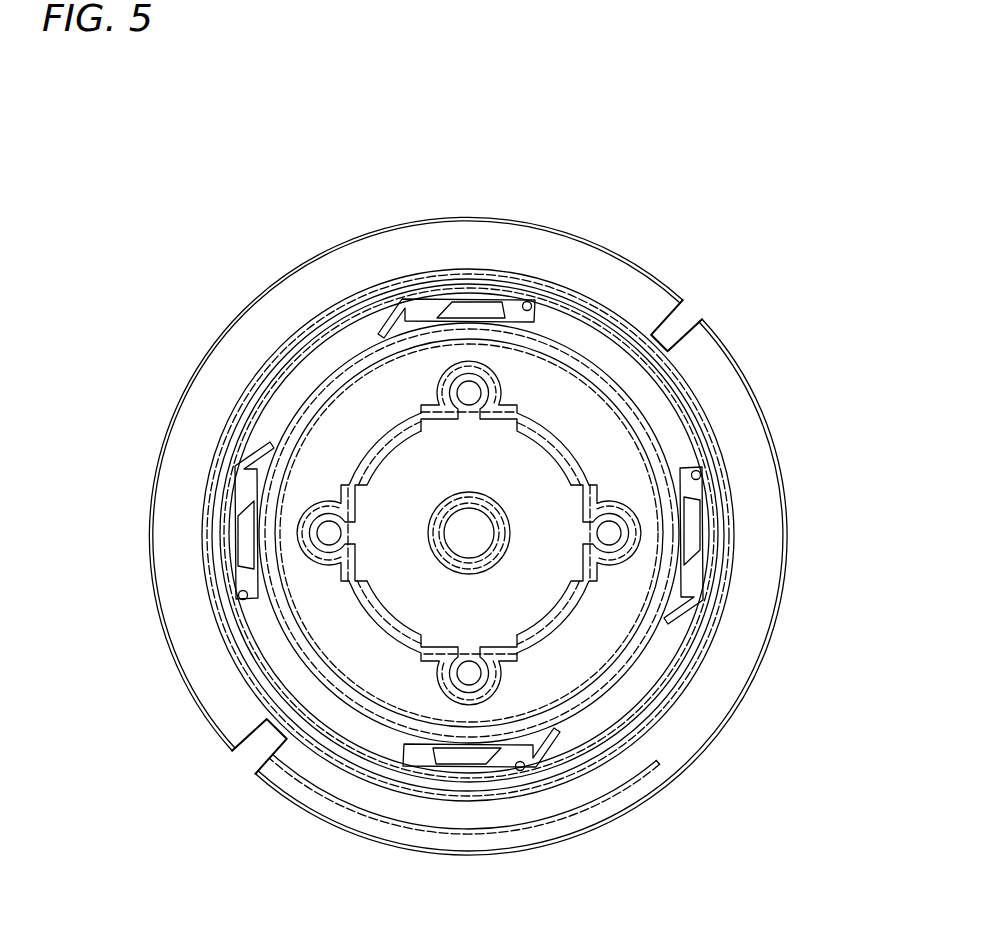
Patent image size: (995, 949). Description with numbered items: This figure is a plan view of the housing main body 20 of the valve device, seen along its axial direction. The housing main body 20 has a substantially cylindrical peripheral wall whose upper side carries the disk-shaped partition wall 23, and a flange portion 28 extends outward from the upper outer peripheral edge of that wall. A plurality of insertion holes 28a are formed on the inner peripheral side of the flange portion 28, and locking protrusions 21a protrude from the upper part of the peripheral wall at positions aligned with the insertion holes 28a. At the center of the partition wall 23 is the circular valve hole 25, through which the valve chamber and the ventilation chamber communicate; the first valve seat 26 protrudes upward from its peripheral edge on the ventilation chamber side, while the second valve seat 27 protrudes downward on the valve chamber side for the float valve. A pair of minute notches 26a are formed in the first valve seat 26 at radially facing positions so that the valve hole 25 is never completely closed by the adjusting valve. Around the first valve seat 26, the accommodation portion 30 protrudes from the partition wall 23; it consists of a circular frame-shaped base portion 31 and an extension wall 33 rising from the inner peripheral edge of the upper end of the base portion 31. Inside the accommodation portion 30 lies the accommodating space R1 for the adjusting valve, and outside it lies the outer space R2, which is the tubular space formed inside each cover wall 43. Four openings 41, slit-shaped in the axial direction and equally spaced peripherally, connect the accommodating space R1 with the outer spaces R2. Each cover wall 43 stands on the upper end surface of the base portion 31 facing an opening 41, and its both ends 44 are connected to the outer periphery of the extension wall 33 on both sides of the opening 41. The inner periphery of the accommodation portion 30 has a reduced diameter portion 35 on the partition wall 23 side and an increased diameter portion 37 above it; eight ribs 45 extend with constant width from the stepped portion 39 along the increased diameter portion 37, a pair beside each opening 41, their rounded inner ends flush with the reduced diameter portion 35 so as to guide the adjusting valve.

The housing main body 20 is at (415, 214).
The locking protrusion 21a is at (487, 302).
The partition wall 23 is at (320, 646).
The valve hole 25 is at (484, 531).
The first valve seat 26 is at (489, 534).
The minute notch 26a is at (450, 507).
The second valve seat 27 is at (660, 765).
The flange portion 28 is at (501, 536).
The insertion hole 28a is at (530, 303).
The accommodation portion 30 is at (660, 357).
The base portion 31 is at (608, 638).
The extension wall 33 is at (510, 685).
The reduced diameter portion 35 is at (262, 780).
The increased diameter portion 37 is at (433, 661).
The stepped portion 39 is at (232, 750).
The opening 41 is at (480, 554).
The cover wall 43 is at (470, 299).
The end of cover wall 44 is at (440, 400).
The rib 45 is at (551, 590).
The accommodating space R1 is at (366, 605).
The outer space R2 is at (471, 392).